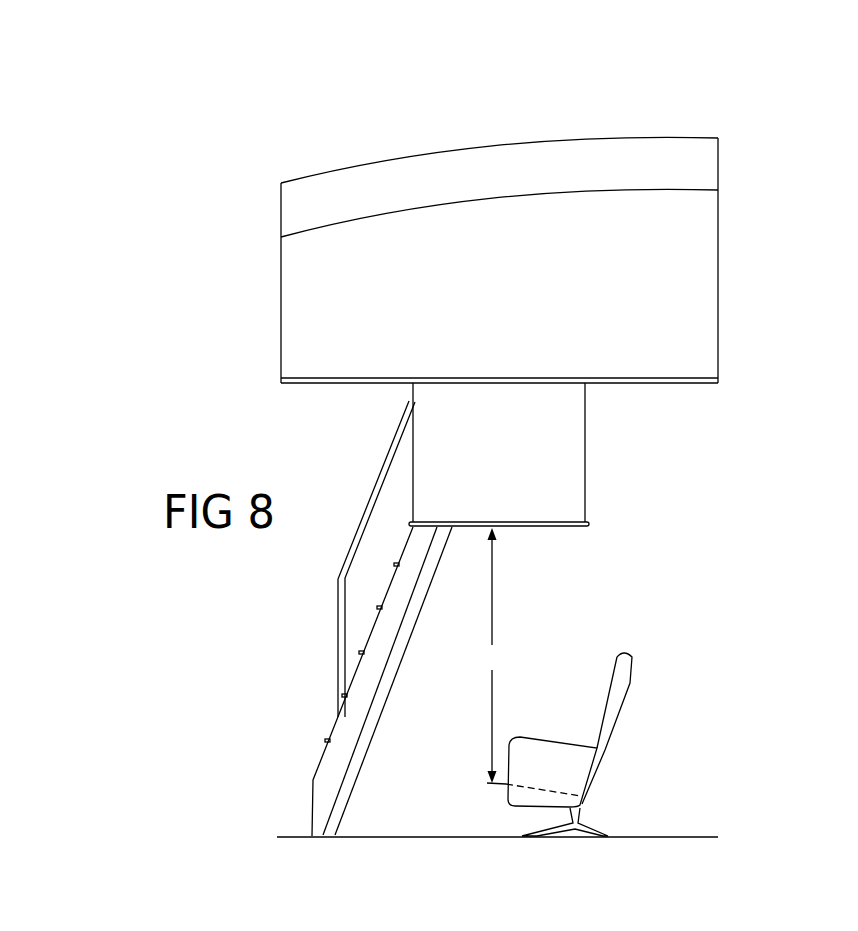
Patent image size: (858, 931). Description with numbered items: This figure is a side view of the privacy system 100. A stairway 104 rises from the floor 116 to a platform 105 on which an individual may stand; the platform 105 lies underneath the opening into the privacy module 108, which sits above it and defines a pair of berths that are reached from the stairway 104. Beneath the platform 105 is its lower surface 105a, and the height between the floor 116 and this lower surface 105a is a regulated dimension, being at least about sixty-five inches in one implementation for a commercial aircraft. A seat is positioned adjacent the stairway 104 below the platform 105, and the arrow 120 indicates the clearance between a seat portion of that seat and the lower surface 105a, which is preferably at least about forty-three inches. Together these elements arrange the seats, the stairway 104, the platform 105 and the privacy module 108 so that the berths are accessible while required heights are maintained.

The privacy system 100 is at (549, 303).
The privacy module 108 is at (728, 341).
The platform 105 is at (561, 475).
The lower surface 105a is at (523, 527).
The stairway 104 is at (332, 753).
The arrow 120 is at (491, 656).
The floor 116 is at (643, 837).